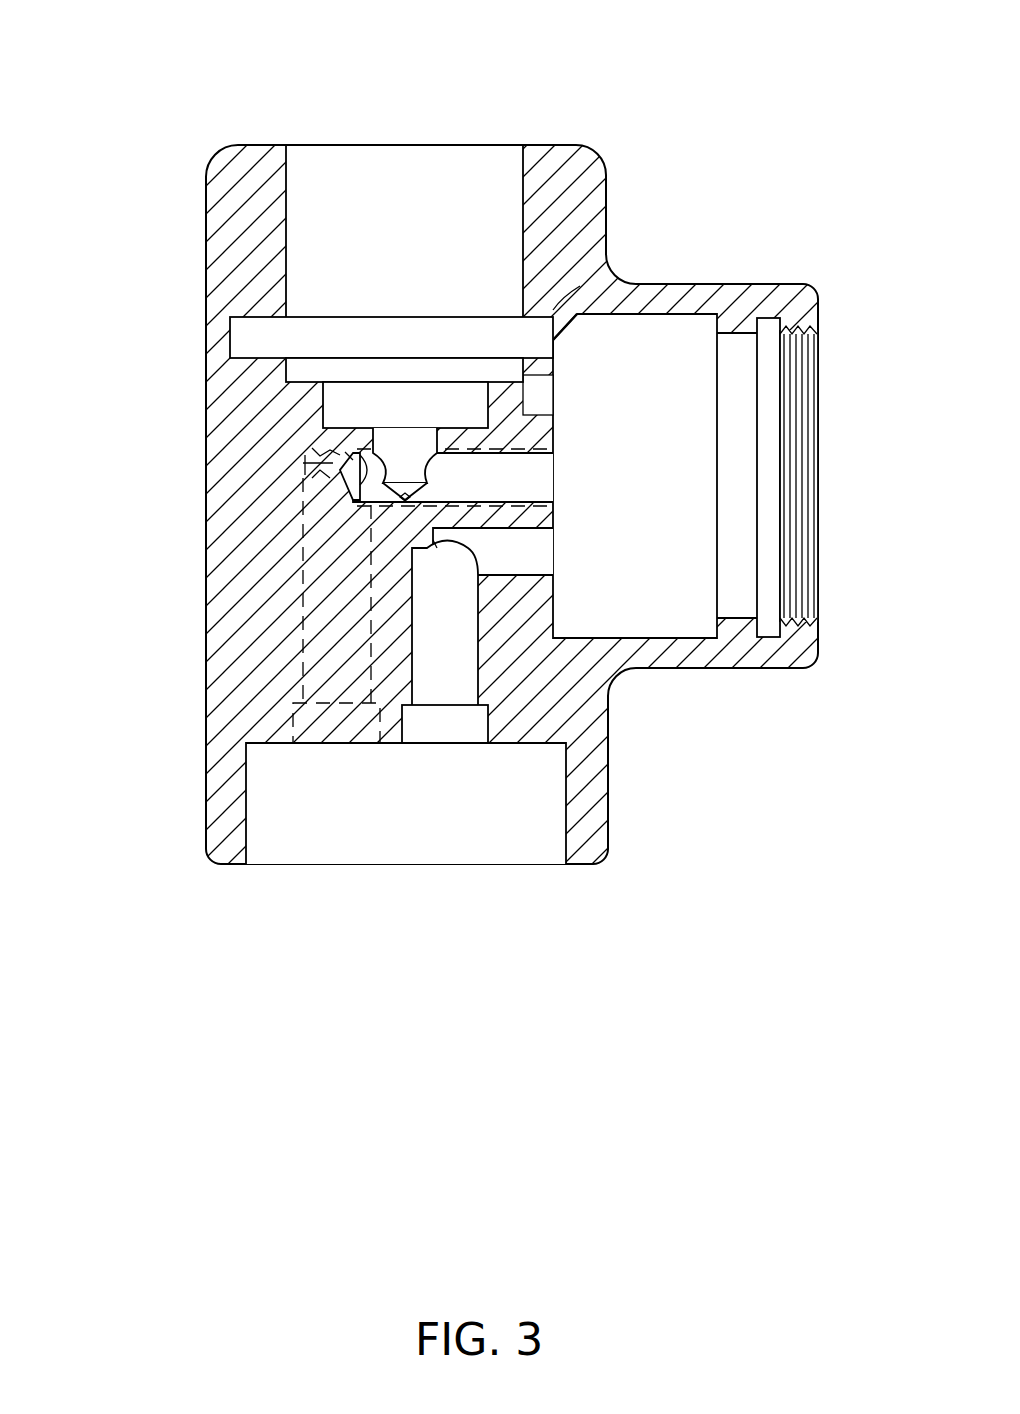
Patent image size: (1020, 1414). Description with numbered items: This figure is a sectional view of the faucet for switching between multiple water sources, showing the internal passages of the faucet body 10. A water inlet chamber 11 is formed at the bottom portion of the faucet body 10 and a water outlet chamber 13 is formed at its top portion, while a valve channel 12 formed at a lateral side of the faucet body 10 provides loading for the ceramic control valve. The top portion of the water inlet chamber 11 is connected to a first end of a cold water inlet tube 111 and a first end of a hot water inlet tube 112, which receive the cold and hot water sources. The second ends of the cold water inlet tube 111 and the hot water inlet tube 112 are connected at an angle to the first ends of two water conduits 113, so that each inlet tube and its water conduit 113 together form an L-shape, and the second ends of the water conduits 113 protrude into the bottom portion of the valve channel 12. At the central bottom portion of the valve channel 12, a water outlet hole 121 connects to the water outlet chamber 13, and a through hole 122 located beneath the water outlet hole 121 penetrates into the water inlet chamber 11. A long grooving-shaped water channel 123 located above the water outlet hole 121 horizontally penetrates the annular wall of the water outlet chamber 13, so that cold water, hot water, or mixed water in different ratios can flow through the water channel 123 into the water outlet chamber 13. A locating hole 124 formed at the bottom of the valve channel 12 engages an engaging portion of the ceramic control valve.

The faucet body 10 is at (232, 143).
The water inlet chamber 11 is at (548, 822).
The cold water inlet tube 111 is at (306, 636).
The hot water inlet tube 112 is at (236, 678).
The water conduit 113 is at (316, 447).
The valve channel 12 is at (765, 478).
The water outlet hole 121 is at (553, 472).
The through hole 122 is at (553, 553).
The water channel 123 is at (583, 292).
The locating hole 124 is at (562, 376).
The water outlet chamber 13 is at (478, 162).